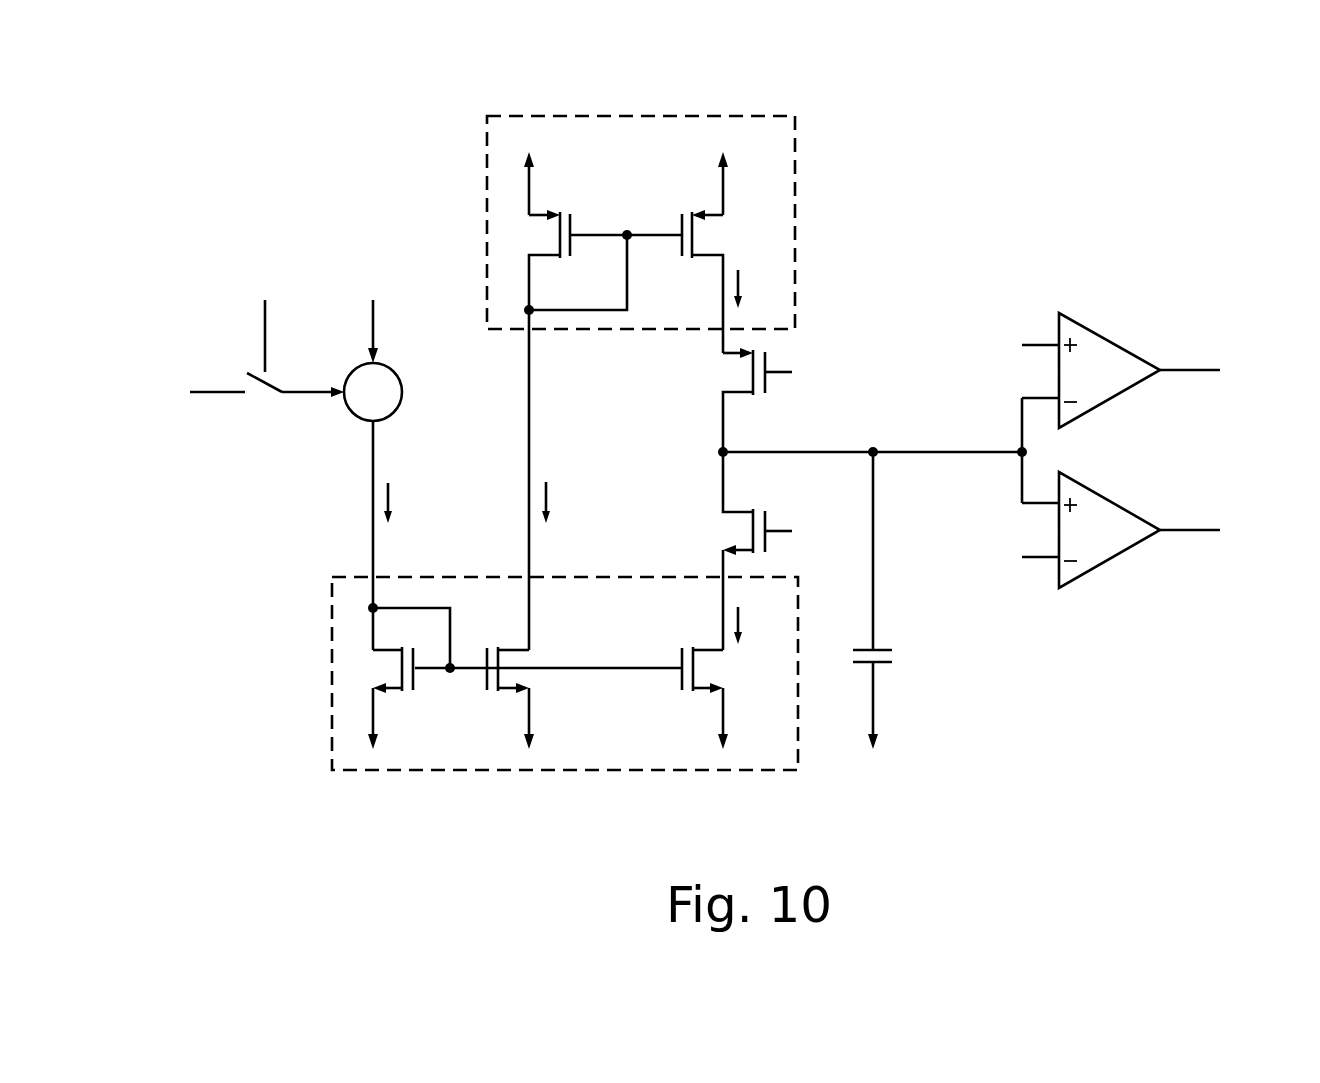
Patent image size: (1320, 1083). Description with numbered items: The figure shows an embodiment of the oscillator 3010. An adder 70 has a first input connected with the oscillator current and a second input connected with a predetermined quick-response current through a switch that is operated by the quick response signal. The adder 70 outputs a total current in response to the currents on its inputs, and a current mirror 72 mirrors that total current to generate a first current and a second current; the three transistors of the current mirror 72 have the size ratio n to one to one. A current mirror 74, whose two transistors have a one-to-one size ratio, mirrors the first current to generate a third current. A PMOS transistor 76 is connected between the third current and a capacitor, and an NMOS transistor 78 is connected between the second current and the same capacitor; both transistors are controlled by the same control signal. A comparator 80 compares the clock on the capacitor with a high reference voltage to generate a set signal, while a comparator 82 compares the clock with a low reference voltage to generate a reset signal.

The oscillator 3010 is at (1212, 132).
The adder 70 is at (402, 395).
The current mirror 72 is at (330, 673).
The current mirror 74 is at (795, 222).
The PMOS transistor 76 is at (716, 375).
The NMOS transistor 78 is at (716, 529).
The comparator 80 is at (1112, 338).
The comparator 82 is at (1112, 498).